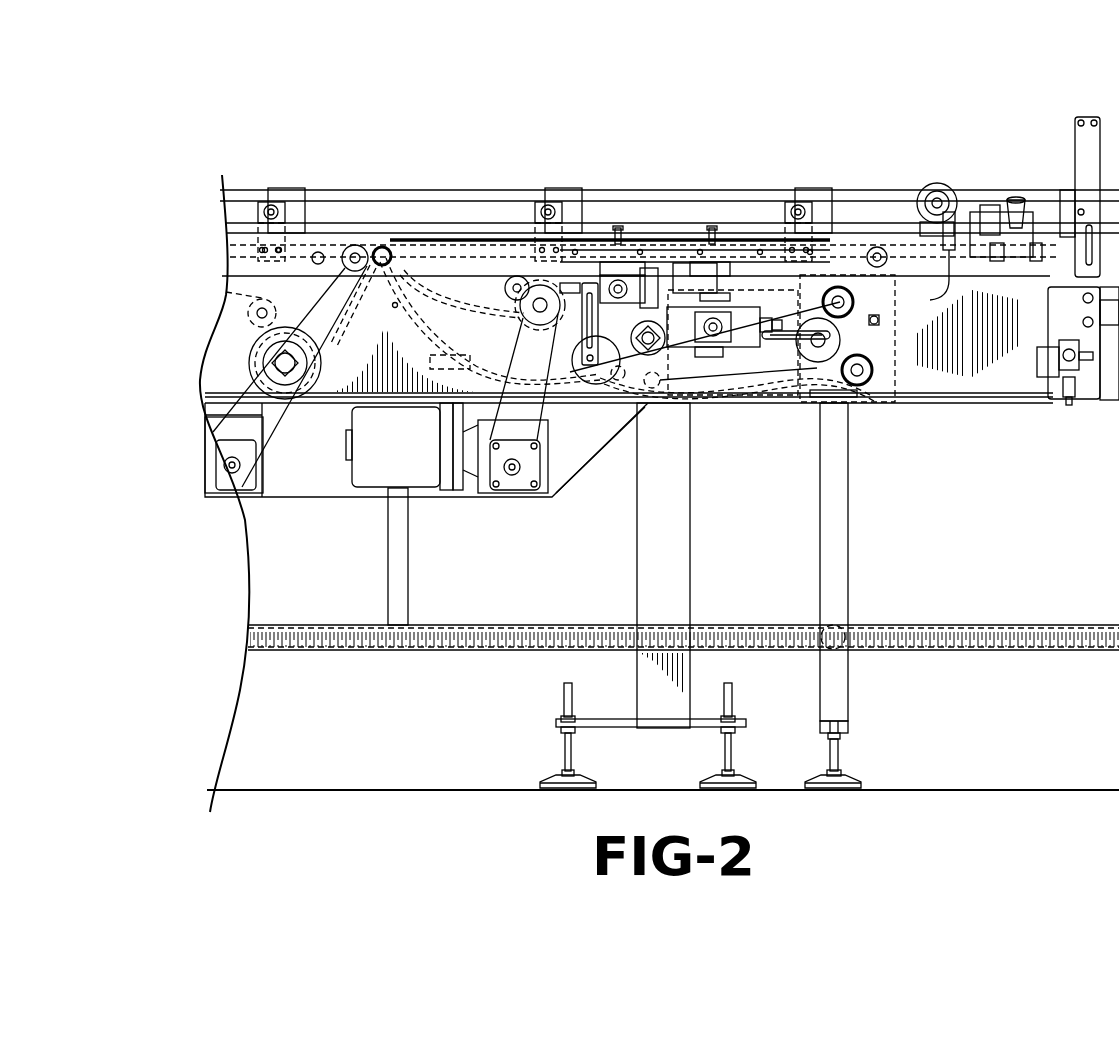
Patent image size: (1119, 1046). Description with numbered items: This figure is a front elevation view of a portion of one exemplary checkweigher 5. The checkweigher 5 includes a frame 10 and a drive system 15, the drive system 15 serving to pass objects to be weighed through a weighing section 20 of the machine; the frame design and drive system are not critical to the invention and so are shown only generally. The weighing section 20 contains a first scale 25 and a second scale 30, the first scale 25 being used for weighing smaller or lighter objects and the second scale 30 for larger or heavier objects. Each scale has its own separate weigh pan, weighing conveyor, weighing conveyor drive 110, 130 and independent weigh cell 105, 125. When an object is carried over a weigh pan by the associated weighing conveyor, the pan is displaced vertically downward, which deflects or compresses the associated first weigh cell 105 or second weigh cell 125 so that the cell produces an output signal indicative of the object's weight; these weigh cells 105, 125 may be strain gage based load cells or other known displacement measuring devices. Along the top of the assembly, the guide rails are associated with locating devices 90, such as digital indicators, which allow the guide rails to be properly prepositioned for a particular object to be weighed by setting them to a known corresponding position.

The checkweigher 5 is at (152, 144).
The frame 10 is at (840, 566).
The drive system 15 is at (308, 513).
The weighing section 20 is at (686, 210).
The first scale 25 is at (606, 222).
The second scale 30 is at (730, 222).
The locating devices 90 is at (284, 186).
The first weigh cell 105 is at (620, 325).
The weighing conveyor drive 110 is at (596, 402).
The second weigh cell 125 is at (718, 370).
The weighing conveyor drive 130 is at (793, 375).